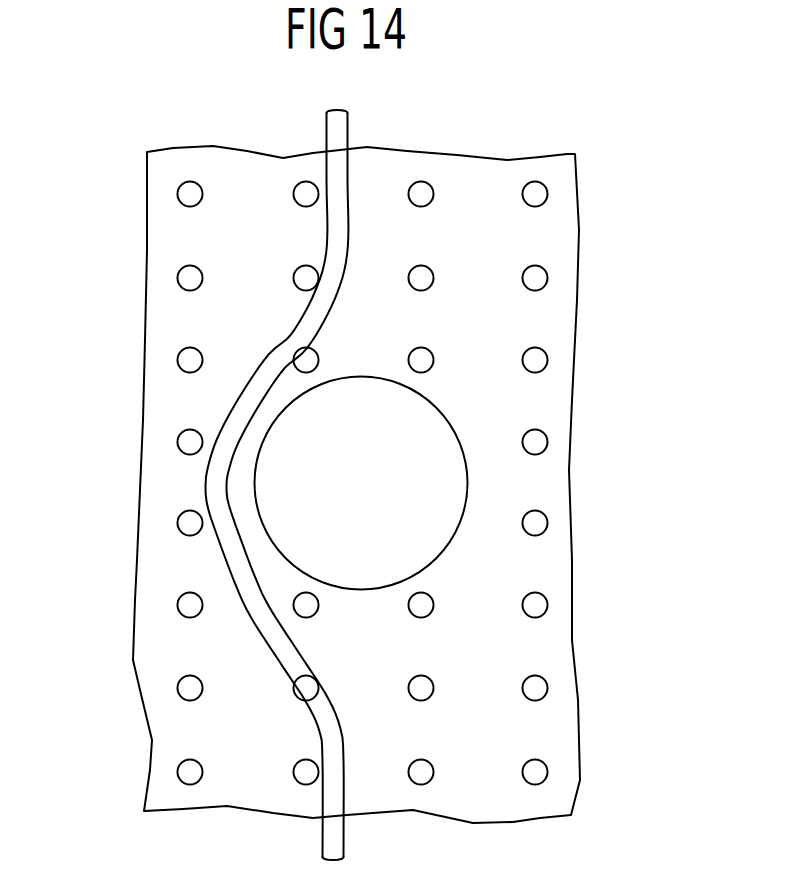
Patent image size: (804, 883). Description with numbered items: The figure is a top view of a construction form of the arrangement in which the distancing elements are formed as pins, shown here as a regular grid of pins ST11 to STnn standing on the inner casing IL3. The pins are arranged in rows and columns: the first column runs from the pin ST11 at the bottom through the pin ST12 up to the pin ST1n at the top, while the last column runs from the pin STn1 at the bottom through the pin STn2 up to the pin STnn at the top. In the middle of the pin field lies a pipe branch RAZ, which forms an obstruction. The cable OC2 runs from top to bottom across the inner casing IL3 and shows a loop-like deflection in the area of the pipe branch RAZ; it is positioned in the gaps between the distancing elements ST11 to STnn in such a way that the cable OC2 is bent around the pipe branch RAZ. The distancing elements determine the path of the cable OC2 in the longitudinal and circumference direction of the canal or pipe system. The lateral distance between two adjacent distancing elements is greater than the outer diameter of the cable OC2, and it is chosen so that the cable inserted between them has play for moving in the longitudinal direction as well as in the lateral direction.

The inner casing IL3 is at (557, 318).
The cable OC2 is at (338, 222).
The pipe branch RAZ is at (424, 428).
The pin ST1n is at (187, 193).
The pin STnn is at (537, 195).
The pin ST12 is at (187, 689).
The pin ST11 is at (187, 772).
The pin STn2 is at (537, 688).
The pin STn1 is at (537, 772).